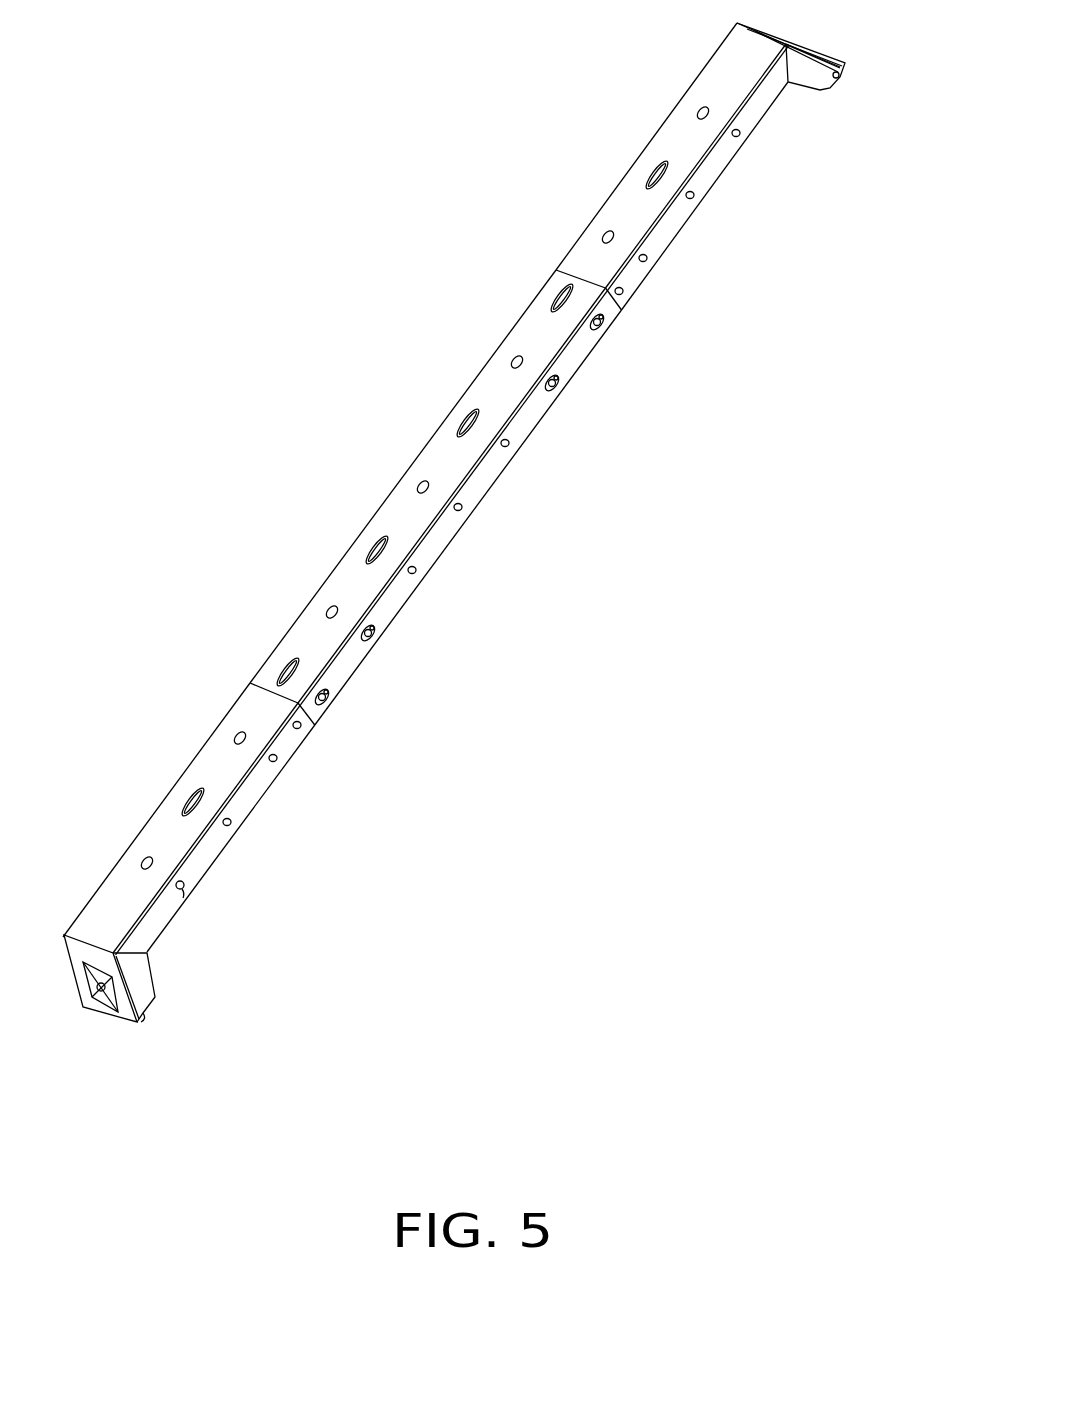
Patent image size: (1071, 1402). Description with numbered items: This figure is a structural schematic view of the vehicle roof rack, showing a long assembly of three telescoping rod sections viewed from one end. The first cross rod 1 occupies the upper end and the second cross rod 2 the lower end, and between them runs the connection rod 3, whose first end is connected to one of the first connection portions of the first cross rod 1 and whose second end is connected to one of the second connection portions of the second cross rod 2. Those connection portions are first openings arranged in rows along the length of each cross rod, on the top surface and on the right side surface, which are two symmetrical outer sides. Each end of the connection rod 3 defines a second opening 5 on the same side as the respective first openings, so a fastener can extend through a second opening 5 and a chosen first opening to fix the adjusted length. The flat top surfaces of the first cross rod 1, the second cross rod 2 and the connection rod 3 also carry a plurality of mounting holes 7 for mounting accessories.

The first cross rod 1 is at (684, 178).
The second cross rod 2 is at (187, 852).
The connection rod 3 is at (397, 497).
The second opening 5 is at (605, 330).
The mounting hole 7 is at (513, 356).